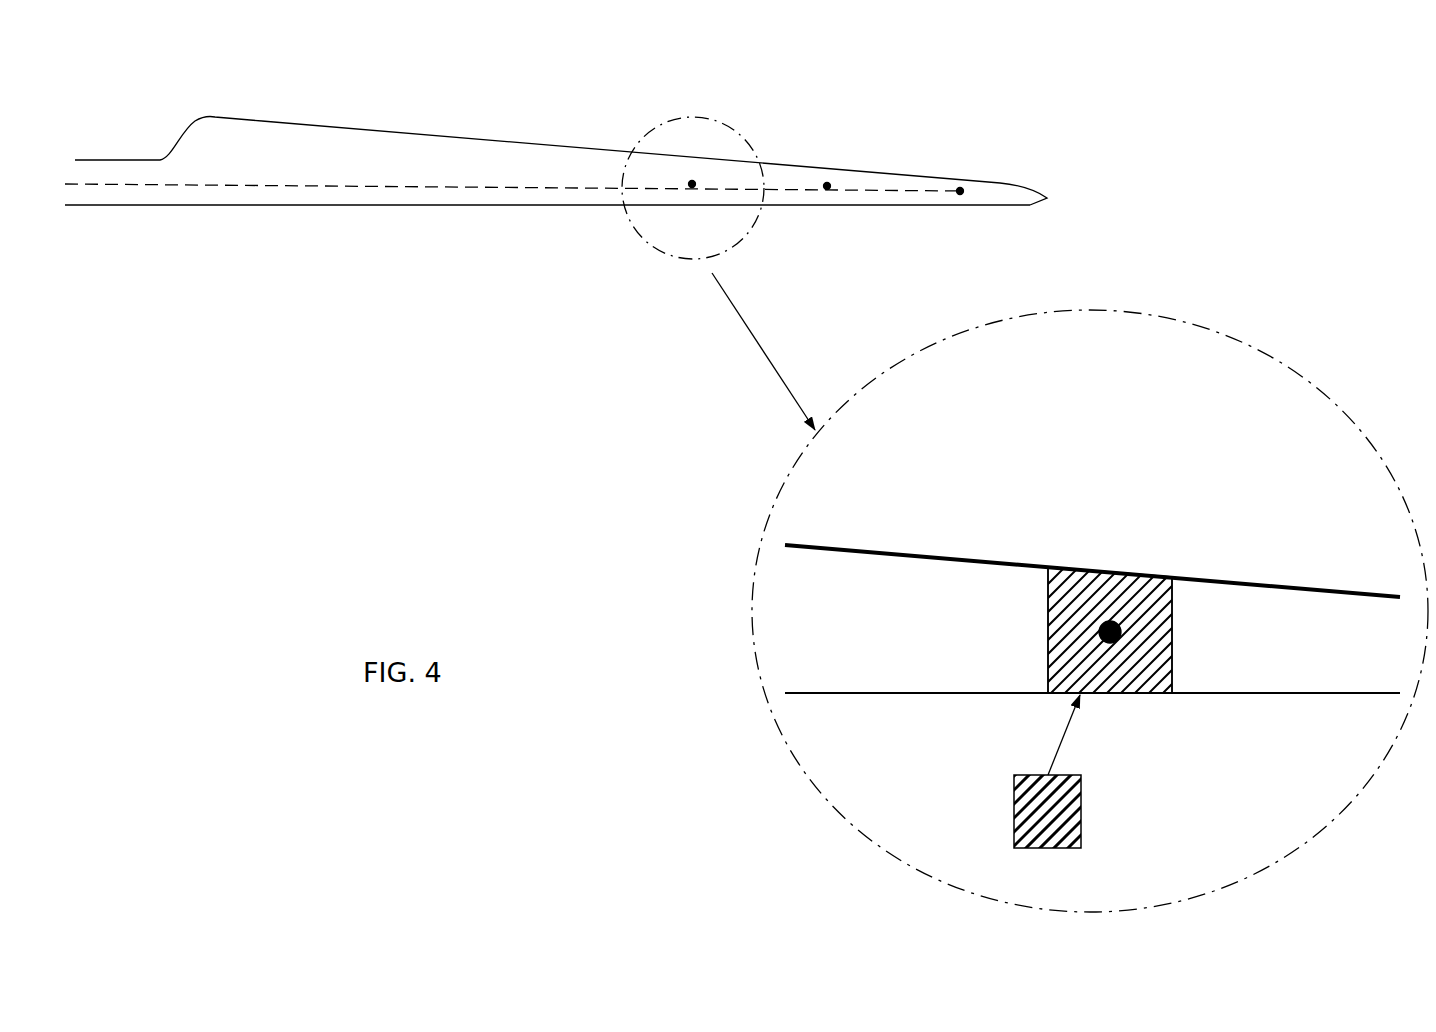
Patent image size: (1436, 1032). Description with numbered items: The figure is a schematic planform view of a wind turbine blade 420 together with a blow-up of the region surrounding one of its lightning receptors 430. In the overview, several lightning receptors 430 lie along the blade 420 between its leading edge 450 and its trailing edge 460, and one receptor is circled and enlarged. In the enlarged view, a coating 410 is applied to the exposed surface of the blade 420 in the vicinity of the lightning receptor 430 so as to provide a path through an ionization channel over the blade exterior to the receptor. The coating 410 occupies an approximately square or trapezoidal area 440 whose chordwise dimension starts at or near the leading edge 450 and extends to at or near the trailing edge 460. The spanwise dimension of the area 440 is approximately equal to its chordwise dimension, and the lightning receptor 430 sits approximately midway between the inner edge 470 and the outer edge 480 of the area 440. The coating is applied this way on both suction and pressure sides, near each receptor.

The coating 410 is at (1083, 812).
The blade 420 is at (262, 142).
The lightning receptor 430 is at (697, 181).
The approximately square or trapezoidal area 440 is at (1162, 586).
The leading edge 450 is at (507, 207).
The trailing edge 460 is at (490, 138).
The inner edge 470 is at (1046, 648).
The outer edge 480 is at (1174, 648).